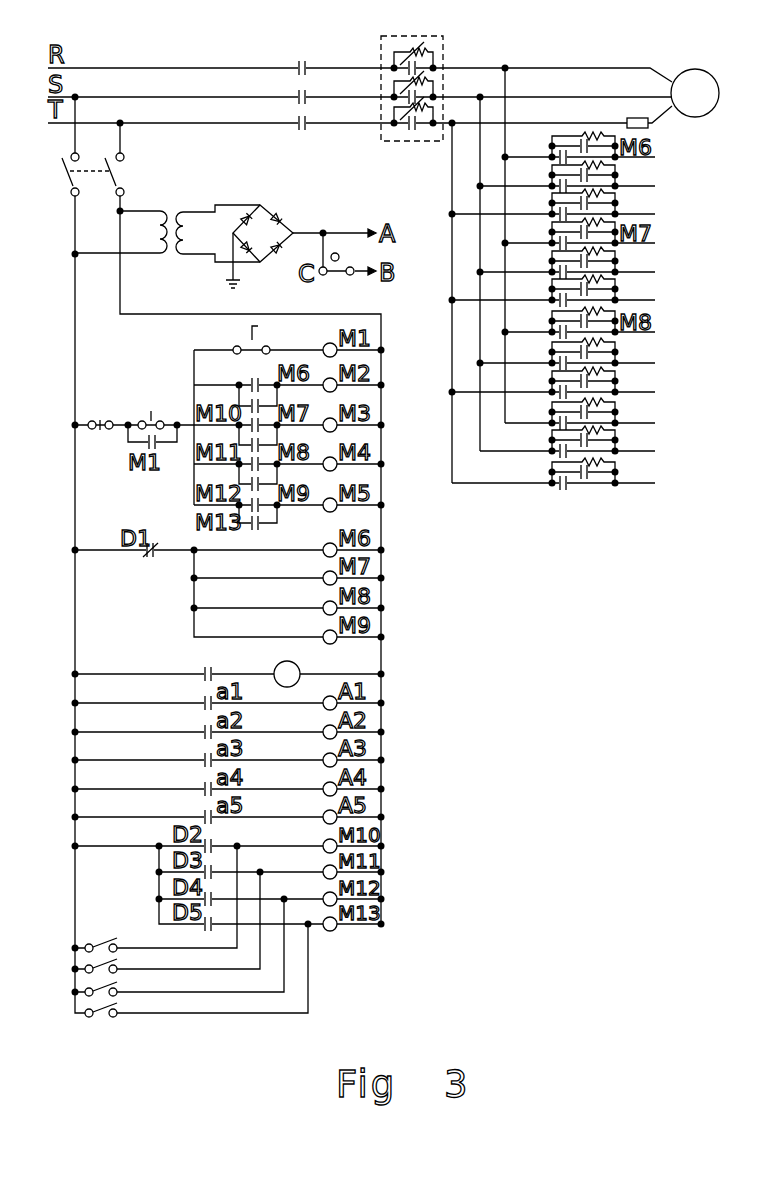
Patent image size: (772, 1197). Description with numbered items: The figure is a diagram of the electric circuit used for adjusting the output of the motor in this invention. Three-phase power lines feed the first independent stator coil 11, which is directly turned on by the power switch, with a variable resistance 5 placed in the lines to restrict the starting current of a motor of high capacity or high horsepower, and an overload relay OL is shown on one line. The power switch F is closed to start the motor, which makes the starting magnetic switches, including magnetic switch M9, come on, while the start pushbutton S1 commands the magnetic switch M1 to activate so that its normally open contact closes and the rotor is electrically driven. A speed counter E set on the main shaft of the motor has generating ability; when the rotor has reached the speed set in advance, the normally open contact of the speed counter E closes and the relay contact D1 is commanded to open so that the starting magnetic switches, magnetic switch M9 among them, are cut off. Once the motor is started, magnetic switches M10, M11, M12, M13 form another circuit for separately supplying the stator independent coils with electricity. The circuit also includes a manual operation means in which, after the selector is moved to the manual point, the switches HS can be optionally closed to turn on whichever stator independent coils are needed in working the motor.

The variable resistance 5 is at (438, 37).
The first independent stator coil 11 is at (695, 93).
The magnetic switch M1 is at (299, 82).
The overload relay OL is at (634, 111).
The power switch F is at (82, 174).
The start pushbutton S1 is at (153, 410).
The speed counter E is at (197, 664).
The relay contact D1 is at (271, 667).
The switches HS is at (106, 965).
The magnetic switch M9 is at (600, 414).
The magnetic switch M10 is at (563, 148).
The magnetic switch M11 is at (563, 234).
The magnetic switch M12 is at (563, 323).
The magnetic switch M13 is at (576, 486).